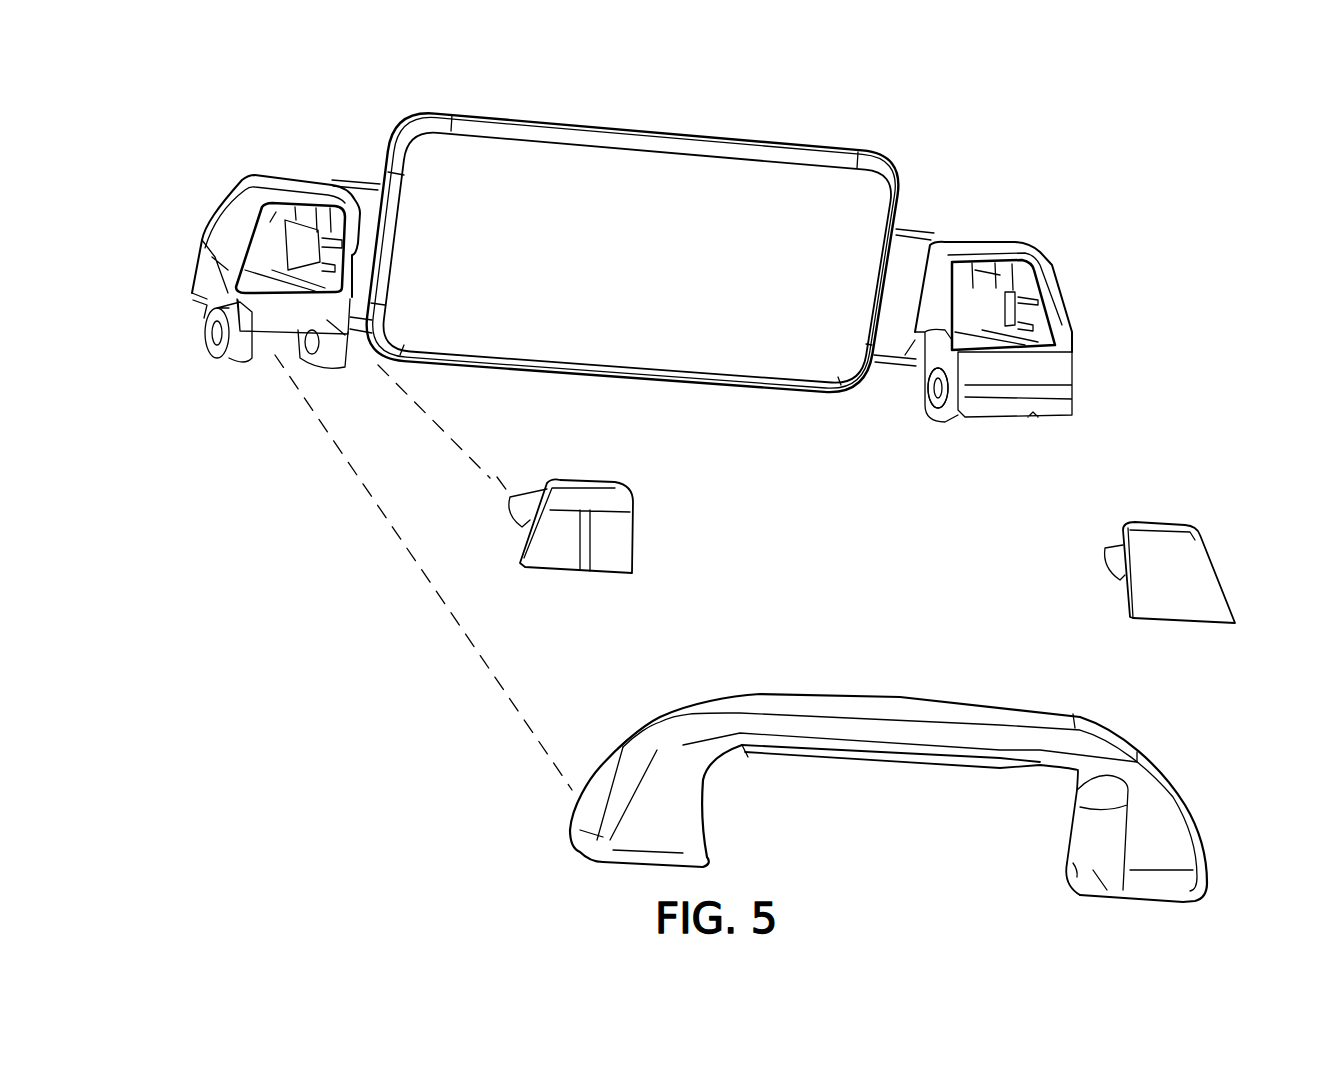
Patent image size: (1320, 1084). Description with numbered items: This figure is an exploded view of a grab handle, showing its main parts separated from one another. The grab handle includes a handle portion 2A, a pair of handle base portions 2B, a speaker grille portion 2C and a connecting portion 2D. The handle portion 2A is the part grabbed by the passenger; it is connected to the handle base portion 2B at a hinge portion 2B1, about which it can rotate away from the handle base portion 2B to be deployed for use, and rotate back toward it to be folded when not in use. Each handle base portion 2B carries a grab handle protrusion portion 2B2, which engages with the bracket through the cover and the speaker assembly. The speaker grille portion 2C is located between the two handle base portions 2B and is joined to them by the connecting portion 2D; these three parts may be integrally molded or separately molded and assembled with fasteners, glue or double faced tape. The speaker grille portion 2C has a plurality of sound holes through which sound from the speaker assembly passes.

The handle portion 2A is at (903, 705).
The handle base portion 2B is at (285, 178).
The hinge portion 2B1 is at (927, 407).
The grab handle protrusion portion 2B2 is at (523, 497).
The speaker grille portion 2C is at (738, 181).
The connecting portion 2D is at (923, 228).